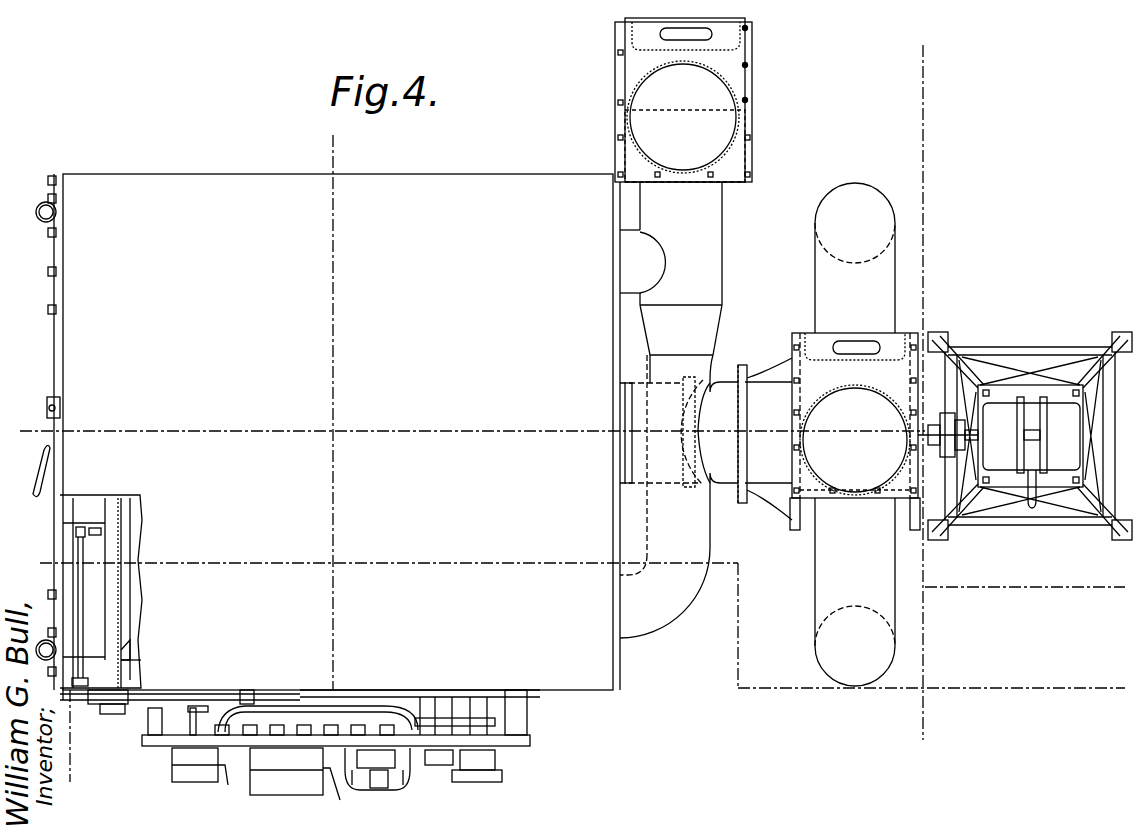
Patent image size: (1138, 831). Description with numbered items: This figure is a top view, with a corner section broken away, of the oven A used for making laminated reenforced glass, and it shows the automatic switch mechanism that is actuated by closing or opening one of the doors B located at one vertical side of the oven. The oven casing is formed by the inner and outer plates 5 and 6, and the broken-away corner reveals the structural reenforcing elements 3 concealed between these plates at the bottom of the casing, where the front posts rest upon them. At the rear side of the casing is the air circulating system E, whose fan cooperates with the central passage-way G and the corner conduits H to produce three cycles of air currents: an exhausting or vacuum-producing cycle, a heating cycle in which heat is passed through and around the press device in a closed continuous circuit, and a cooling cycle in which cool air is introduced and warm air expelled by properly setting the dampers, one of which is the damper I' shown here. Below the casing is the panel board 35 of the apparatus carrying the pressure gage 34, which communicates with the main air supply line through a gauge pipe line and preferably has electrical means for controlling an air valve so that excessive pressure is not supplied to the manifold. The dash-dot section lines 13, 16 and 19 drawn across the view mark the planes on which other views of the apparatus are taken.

The oven A is at (337, 432).
The doors B is at (62, 357).
The inner plate 5 is at (188, 367).
The outer plate 6 is at (118, 549).
The structural reenforcing elements 3 is at (316, 145).
The section line 13 is at (42, 578).
The section line 16 is at (28, 431).
The section line 19 is at (940, 50).
The pressure gage 34 is at (397, 774).
The panel board 35 is at (530, 738).
The damper I' is at (703, 100).
The air circulating system E is at (824, 434).
The central passage-way G is at (643, 436).
The corner conduits H is at (690, 547).